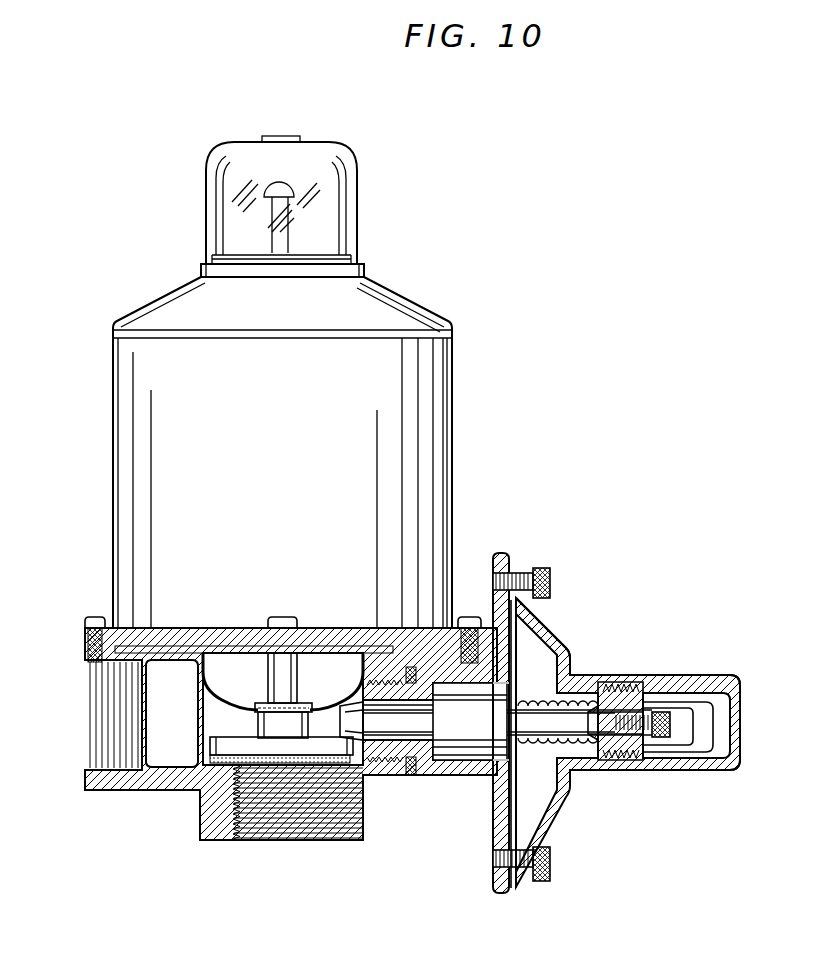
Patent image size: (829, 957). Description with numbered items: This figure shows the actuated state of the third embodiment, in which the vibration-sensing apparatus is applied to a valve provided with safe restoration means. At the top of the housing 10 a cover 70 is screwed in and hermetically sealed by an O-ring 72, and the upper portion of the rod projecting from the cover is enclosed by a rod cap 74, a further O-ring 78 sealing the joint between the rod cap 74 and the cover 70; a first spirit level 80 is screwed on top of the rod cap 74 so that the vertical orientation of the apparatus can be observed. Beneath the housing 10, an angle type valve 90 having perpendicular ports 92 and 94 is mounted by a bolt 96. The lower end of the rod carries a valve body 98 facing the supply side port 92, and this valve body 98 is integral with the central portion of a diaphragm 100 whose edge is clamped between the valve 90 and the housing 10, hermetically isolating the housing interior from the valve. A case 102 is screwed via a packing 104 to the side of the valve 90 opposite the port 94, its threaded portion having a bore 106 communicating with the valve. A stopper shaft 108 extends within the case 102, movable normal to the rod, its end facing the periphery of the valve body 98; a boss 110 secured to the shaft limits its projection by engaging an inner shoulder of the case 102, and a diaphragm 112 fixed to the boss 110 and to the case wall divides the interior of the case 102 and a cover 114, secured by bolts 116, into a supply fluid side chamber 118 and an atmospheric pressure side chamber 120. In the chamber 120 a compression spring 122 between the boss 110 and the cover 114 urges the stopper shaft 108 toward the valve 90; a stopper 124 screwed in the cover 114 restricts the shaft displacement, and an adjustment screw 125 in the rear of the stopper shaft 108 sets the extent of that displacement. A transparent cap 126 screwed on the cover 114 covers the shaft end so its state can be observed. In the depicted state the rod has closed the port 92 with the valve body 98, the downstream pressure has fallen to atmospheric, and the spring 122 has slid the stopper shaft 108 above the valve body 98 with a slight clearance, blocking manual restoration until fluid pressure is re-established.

The housing 10 is at (460, 439).
The cover 70 is at (422, 310).
The O-ring 72 is at (455, 338).
The rod cap 74 is at (350, 201).
The O-ring 78 is at (368, 272).
The first spirit level 80 is at (284, 135).
The angle type valve 90 is at (380, 824).
The port 92 is at (268, 841).
The port 94 is at (90, 722).
The bolt 96 is at (94, 617).
The valve body 98 is at (211, 746).
The diaphragm 100 is at (172, 713).
The case 102 is at (445, 772).
The packing 104 is at (428, 786).
The bore 106 is at (398, 732).
The stopper shaft 108 is at (388, 700).
The boss 110 is at (516, 720).
The diaphragm 112 is at (525, 626).
The cover 114 is at (572, 648).
The bolts 116 is at (552, 581).
The supply fluid side chamber 118 is at (476, 778).
The atmospheric pressure side chamber 120 is at (540, 793).
The compression spring 122 is at (586, 758).
The stopper 124 is at (700, 754).
The adjustment screw 125 is at (660, 742).
The cap 126 is at (689, 678).